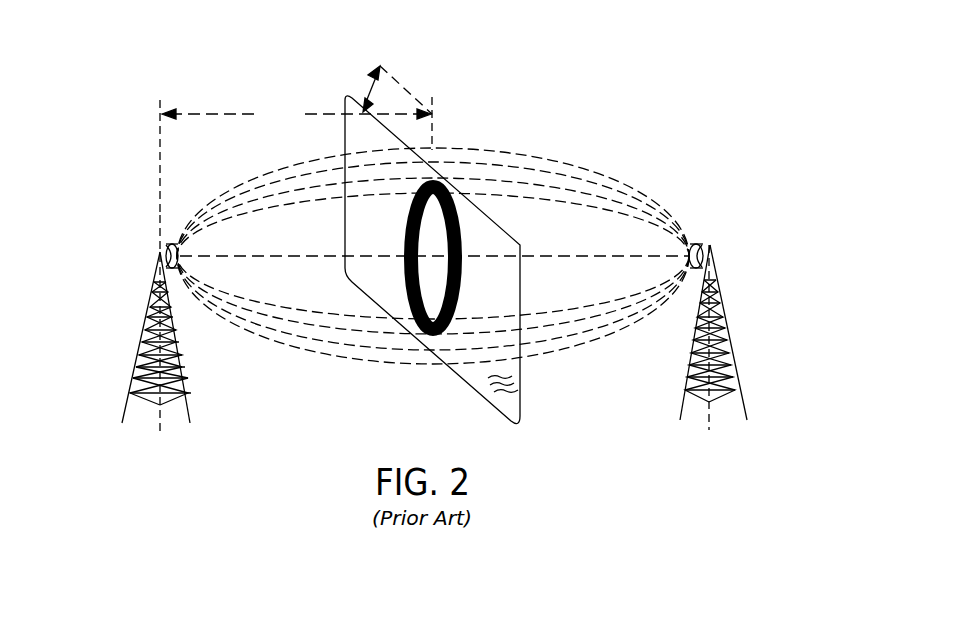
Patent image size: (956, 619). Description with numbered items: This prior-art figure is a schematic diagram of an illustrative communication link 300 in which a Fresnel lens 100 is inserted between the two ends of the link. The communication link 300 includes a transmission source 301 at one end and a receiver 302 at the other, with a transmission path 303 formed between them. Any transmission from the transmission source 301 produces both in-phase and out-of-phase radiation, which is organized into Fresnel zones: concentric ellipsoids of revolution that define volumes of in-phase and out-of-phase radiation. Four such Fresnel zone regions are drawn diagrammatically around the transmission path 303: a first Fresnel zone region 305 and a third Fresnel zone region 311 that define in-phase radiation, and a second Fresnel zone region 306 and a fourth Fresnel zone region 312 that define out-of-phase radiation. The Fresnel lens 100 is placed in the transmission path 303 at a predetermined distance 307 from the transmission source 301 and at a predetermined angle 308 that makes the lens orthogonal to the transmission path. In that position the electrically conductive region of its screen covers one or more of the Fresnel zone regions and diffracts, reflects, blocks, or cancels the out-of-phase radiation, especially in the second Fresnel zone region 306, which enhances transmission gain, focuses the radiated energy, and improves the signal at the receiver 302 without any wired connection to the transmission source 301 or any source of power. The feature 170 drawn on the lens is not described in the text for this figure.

The Fresnel lens 100 is at (469, 261).
The surface feature of panel 170 is at (512, 394).
The communication link 300 is at (436, 230).
The transmission source 301 is at (131, 323).
The receiver 302 is at (740, 318).
The transmission path 303 is at (230, 256).
The first Fresnel zone region 305 is at (680, 234).
The second Fresnel zone region 306 is at (553, 320).
The predetermined distance 307 is at (296, 156).
The predetermined angle 308 is at (362, 95).
The third Fresnel zone region 311 is at (570, 177).
The fourth Fresnel zone region 312 is at (622, 182).